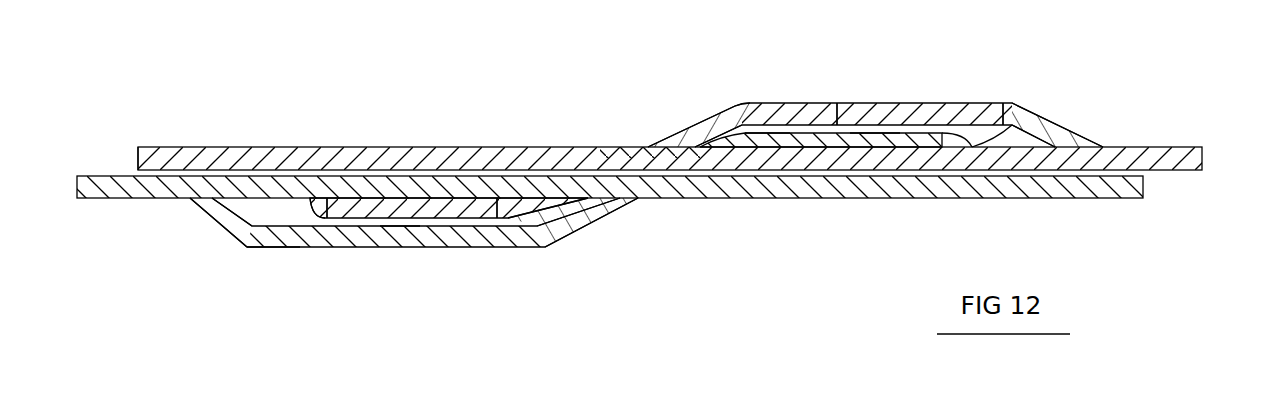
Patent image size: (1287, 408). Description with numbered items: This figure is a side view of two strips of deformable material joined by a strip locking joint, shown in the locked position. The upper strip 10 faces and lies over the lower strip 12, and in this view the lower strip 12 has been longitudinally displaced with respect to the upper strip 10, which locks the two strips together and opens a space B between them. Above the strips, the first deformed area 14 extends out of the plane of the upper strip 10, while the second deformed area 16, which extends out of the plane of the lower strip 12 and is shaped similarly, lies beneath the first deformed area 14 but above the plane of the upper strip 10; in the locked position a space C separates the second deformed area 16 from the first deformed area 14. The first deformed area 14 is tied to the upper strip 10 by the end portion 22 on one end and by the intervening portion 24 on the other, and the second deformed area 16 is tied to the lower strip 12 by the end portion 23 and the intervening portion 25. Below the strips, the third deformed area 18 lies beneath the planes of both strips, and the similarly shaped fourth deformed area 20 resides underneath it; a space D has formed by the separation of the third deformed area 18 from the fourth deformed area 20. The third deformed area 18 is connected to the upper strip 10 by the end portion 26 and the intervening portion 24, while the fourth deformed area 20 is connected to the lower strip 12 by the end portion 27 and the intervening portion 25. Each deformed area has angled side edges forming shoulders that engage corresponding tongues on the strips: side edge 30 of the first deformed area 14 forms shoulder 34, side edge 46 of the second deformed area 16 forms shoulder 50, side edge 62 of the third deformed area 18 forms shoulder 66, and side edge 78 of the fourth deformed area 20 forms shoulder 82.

The upper strip 10 is at (1203, 158).
The lower strip 12 is at (1144, 194).
The first deformed area 14 is at (848, 103).
The second deformed area 16 is at (918, 133).
The third deformed area 18 is at (478, 219).
The fourth deformed area 20 is at (437, 248).
The end portion 22 is at (1077, 133).
The end portion 23 is at (1027, 120).
The intervening portion 24 is at (694, 126).
The intervening portion 25 is at (607, 215).
The end portion 26 is at (303, 200).
The end portion 27 is at (210, 220).
The side edge 30 is at (995, 115).
The shoulder 34 is at (762, 112).
The side edge 46 is at (867, 140).
The shoulder 50 is at (753, 140).
The side edge 62 is at (355, 218).
The shoulder 66 is at (517, 208).
The side edge 78 is at (393, 240).
The shoulder 82 is at (543, 236).
The space B is at (157, 173).
The space C is at (958, 131).
The space D is at (260, 212).